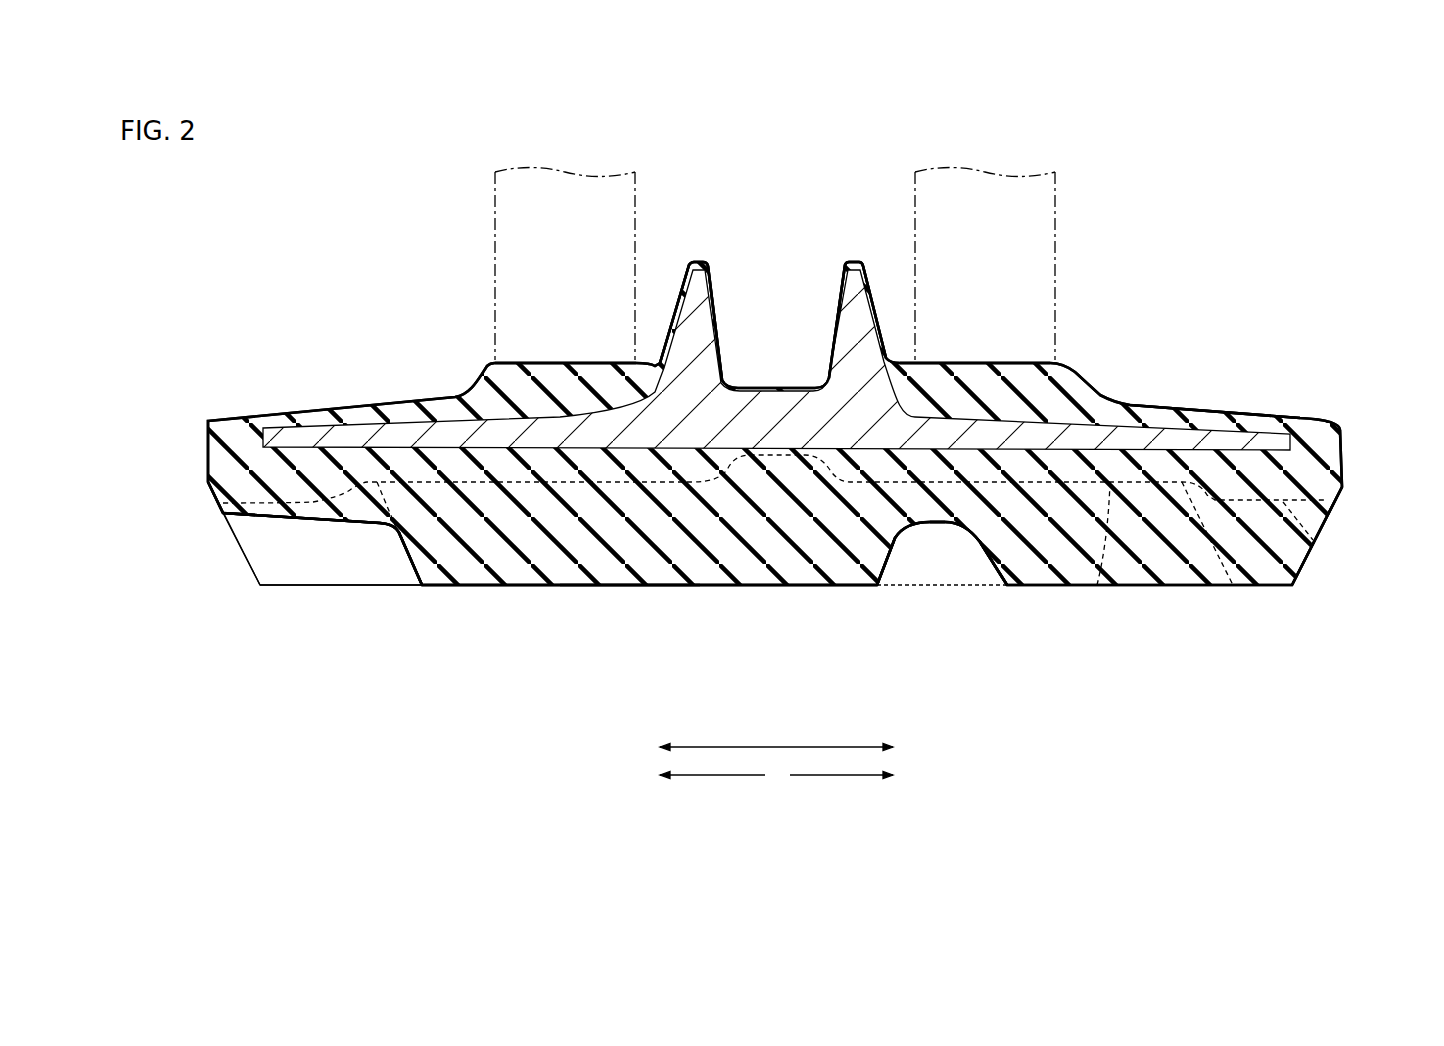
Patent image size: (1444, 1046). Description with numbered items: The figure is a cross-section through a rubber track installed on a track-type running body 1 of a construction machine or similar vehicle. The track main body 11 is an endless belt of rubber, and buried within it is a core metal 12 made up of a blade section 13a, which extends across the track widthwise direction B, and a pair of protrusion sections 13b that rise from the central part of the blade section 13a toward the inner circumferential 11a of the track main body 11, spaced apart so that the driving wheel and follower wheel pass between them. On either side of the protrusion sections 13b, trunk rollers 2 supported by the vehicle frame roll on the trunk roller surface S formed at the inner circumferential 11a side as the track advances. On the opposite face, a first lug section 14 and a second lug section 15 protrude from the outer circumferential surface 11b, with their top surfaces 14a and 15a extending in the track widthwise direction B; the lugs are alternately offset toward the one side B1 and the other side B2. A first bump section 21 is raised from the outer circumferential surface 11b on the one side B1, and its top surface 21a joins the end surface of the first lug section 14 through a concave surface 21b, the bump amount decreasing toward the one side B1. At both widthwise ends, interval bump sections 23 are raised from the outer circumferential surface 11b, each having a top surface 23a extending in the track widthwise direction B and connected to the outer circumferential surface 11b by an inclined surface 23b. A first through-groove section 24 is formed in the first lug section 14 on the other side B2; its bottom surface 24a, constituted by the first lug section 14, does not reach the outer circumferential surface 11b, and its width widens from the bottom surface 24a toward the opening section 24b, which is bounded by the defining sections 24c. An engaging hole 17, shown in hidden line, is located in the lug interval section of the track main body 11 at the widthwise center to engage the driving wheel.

The track-type running body 1 is at (1182, 197).
The trunk roller 2 is at (493, 258).
The track main body 11 is at (1302, 413).
The inner circumferential 11a is at (1167, 405).
The outer circumferential surface 11b is at (1097, 585).
The core metal 12 is at (288, 427).
The blade section 13a is at (347, 437).
The protrusion section 13b is at (703, 293).
The first lug section 14 is at (488, 587).
The top surface 14a is at (622, 587).
The second lug section 15 is at (260, 585).
The top surface 15a is at (338, 587).
The engaging hole 17 is at (745, 457).
The first bump section 21 is at (222, 512).
The top surface 21a is at (283, 517).
The concave surface 21b is at (388, 530).
The interval bump section 23 is at (208, 487).
The top surface 23a is at (1313, 540).
The inclined surface 23b is at (1233, 585).
The first through-groove section 24 is at (917, 568).
The bottom surface 24a is at (955, 523).
The opening section 24b is at (905, 588).
The section defining the opening section 24c is at (877, 587).
The trunk roller surface S is at (530, 360).
The track widthwise direction B is at (776, 733).
The one side B1 is at (712, 793).
The other side B2 is at (841, 793).